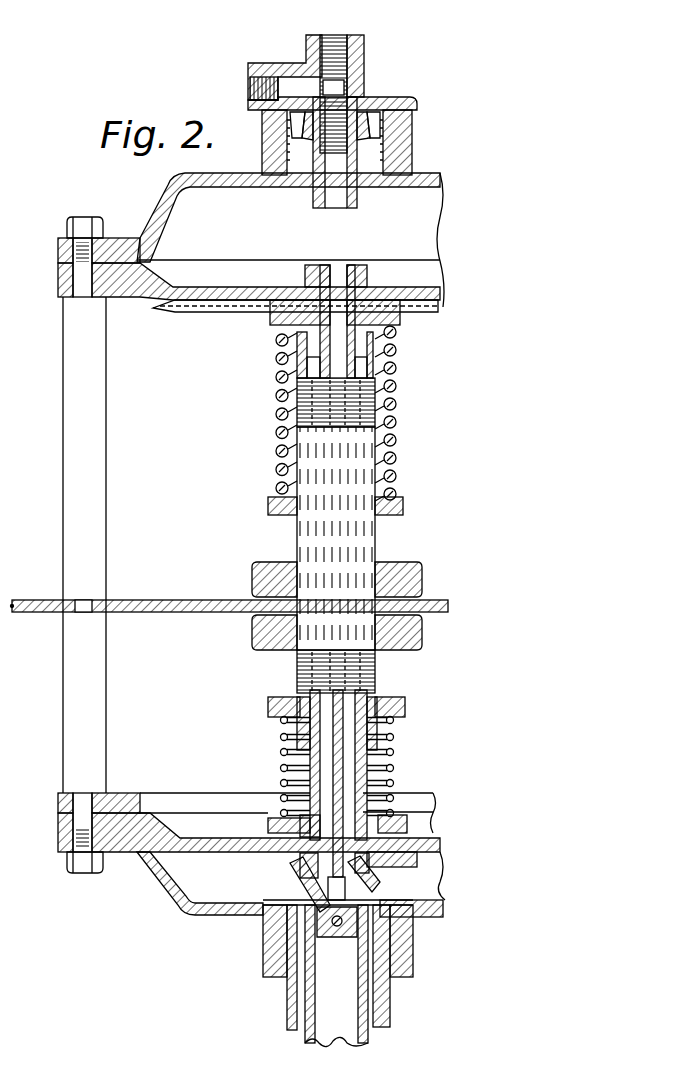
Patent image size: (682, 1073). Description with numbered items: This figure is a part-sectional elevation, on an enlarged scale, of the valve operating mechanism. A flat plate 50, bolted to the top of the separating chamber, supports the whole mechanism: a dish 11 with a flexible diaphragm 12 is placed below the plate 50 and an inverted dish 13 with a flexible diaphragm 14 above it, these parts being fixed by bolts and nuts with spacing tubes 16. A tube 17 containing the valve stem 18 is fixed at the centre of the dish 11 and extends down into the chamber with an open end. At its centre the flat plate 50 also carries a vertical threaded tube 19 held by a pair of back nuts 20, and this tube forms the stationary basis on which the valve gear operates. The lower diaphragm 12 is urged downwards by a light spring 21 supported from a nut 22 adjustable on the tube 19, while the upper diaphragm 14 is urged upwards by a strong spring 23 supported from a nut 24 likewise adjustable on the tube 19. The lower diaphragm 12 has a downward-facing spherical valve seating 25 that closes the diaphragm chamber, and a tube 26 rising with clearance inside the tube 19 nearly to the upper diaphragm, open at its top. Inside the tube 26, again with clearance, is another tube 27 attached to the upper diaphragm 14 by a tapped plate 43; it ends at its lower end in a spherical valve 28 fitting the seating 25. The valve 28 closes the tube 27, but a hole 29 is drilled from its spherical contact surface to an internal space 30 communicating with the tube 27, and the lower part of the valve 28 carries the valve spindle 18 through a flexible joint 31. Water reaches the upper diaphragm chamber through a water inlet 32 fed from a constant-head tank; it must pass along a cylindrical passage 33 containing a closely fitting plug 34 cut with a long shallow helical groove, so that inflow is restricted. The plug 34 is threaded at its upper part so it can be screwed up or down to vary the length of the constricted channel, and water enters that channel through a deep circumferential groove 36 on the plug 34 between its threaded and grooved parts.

The dish 11 is at (207, 912).
The flexible diaphragm 12 is at (192, 853).
The inverted dish 13 is at (230, 175).
The flexible diaphragm 14 is at (230, 300).
The spacing tubes 16 is at (106, 510).
The tube 17 is at (293, 1003).
The valve stem 18 is at (380, 1003).
The vertical threaded tube 19 is at (377, 547).
The back nuts 20 is at (252, 630).
The light spring 21 is at (393, 768).
The nut 22 is at (270, 706).
The strong spring 23 is at (398, 427).
The nut 24 is at (403, 508).
The spherical valve seating 25 is at (285, 869).
The tube 26 is at (377, 367).
The tube 27 is at (322, 347).
The spherical valve 28 is at (323, 866).
The hole 29 is at (263, 916).
The internal space 30 is at (350, 888).
The flexible joint 31 is at (337, 938).
The water inlet 32 is at (250, 88).
The cylindrical passage 33 is at (328, 193).
The plug 34 is at (355, 153).
The circumferential groove 36 is at (364, 94).
The tapped plate 43 is at (270, 318).
The flat plate 50 is at (212, 583).